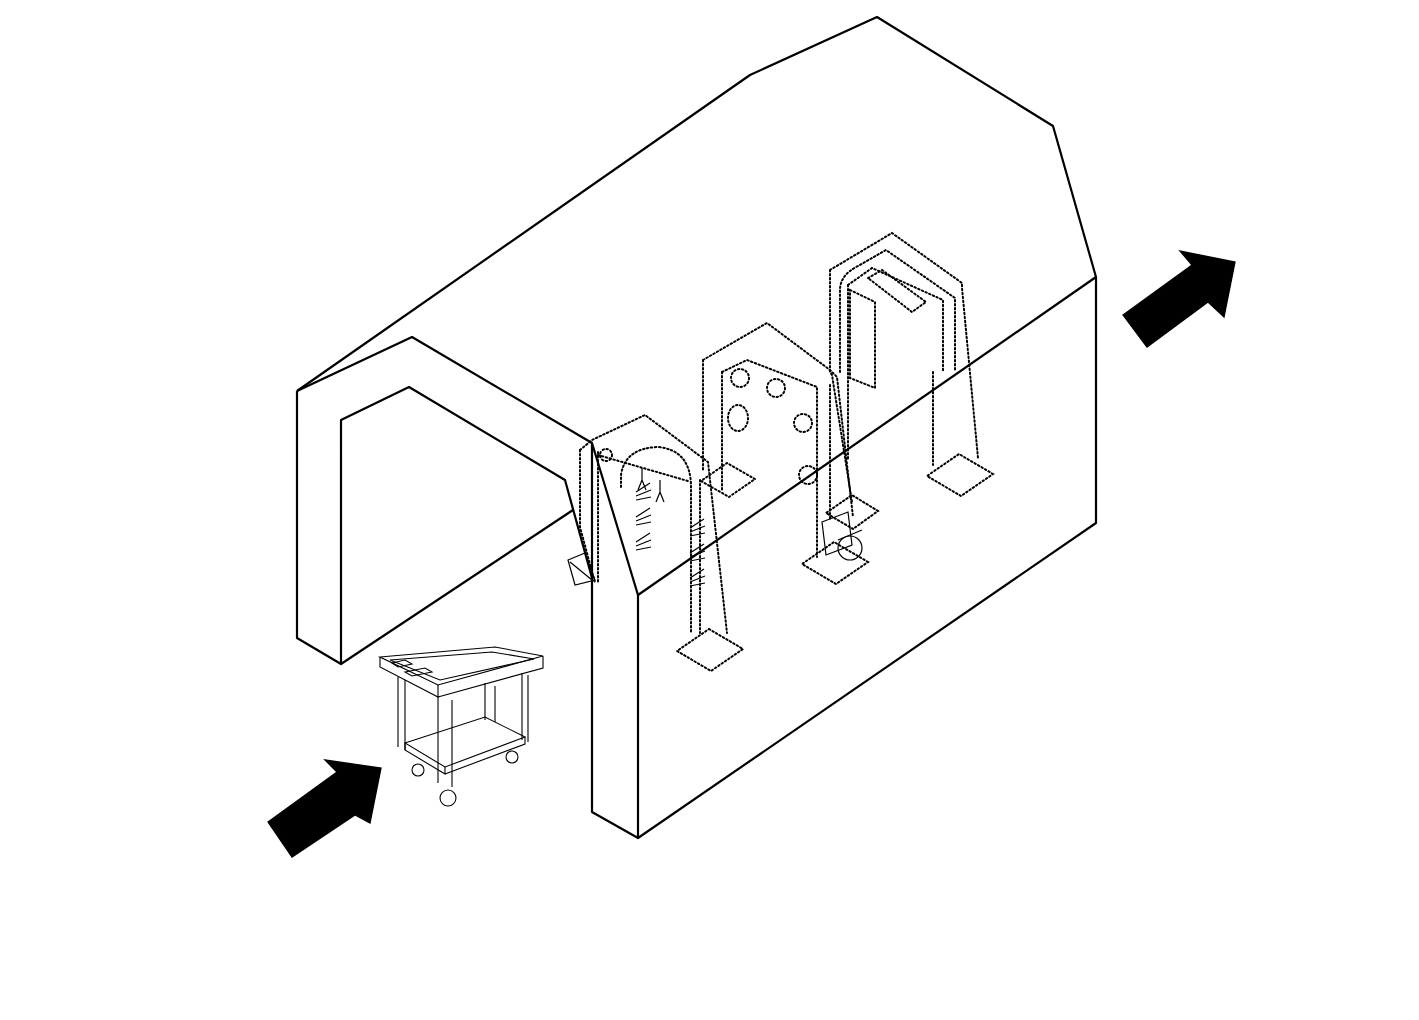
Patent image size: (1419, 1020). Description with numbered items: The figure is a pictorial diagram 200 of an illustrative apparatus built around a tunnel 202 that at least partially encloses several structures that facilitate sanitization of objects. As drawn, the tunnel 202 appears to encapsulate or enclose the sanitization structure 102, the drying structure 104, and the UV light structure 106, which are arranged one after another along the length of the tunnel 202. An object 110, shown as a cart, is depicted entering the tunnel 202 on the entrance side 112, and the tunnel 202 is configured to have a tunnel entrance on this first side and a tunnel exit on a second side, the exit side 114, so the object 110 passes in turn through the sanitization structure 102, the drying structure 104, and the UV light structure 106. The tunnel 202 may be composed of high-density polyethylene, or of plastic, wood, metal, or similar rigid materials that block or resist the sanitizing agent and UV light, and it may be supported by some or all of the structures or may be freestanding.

The pictorial diagram 200 is at (137, 62).
The tunnel 202 is at (300, 457).
The sanitization structure 102 is at (728, 612).
The drying structure 104 is at (858, 518).
The UV light structure 106 is at (980, 457).
The object 110 is at (395, 672).
The entrance side 112 is at (312, 840).
The exit side 114 is at (1142, 302).